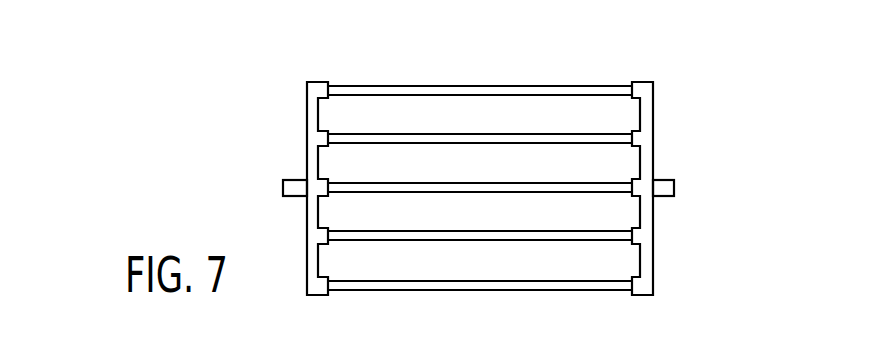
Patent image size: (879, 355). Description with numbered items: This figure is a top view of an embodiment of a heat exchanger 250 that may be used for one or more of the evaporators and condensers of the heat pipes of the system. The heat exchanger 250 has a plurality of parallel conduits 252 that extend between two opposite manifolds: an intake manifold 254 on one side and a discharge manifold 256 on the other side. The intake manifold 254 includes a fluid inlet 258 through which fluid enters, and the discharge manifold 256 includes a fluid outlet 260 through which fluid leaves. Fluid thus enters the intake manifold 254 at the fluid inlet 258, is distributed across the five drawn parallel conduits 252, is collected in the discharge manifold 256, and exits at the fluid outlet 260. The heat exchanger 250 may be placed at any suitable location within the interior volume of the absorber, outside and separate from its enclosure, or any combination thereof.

The heat exchanger 250 is at (588, 42).
The parallel conduits 252 is at (480, 292).
The intake manifold 254 is at (314, 296).
The discharge manifold 256 is at (645, 296).
The fluid inlet 258 is at (283, 187).
The fluid outlet 260 is at (675, 188).